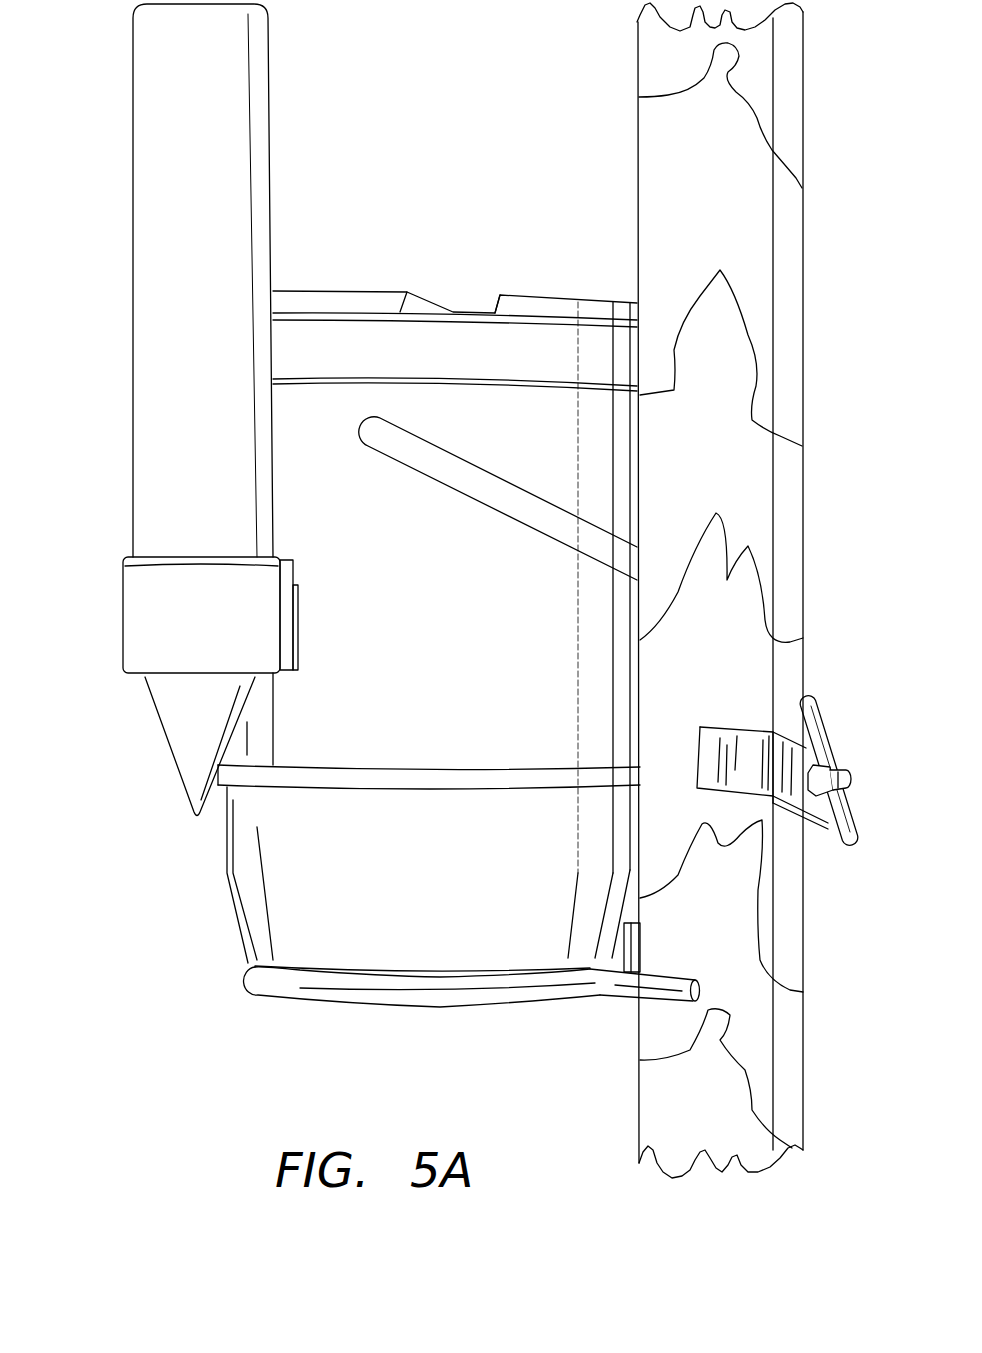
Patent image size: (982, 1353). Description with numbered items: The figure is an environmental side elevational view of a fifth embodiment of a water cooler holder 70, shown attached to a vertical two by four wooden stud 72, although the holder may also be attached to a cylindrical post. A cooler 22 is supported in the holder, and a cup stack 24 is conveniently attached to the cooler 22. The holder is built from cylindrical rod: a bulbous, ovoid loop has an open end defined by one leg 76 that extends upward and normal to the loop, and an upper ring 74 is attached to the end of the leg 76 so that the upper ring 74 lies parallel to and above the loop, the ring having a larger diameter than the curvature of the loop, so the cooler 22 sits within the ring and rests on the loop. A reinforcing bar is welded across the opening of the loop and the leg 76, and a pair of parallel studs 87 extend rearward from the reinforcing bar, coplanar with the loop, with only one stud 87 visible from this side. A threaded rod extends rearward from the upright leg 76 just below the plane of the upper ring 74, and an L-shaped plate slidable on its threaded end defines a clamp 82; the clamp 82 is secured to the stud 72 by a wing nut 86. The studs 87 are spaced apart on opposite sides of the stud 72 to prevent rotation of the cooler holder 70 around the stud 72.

The cooler 22 is at (458, 608).
The cup stack 24 is at (148, 135).
The water cooler holder 70 is at (192, 898).
The two by four wooden stud 72 is at (735, 190).
The upper ring 74 is at (462, 770).
The leg 76 is at (388, 1007).
The clamp 82 is at (745, 730).
The wing nut 86 is at (817, 712).
The studs 87 is at (660, 998).